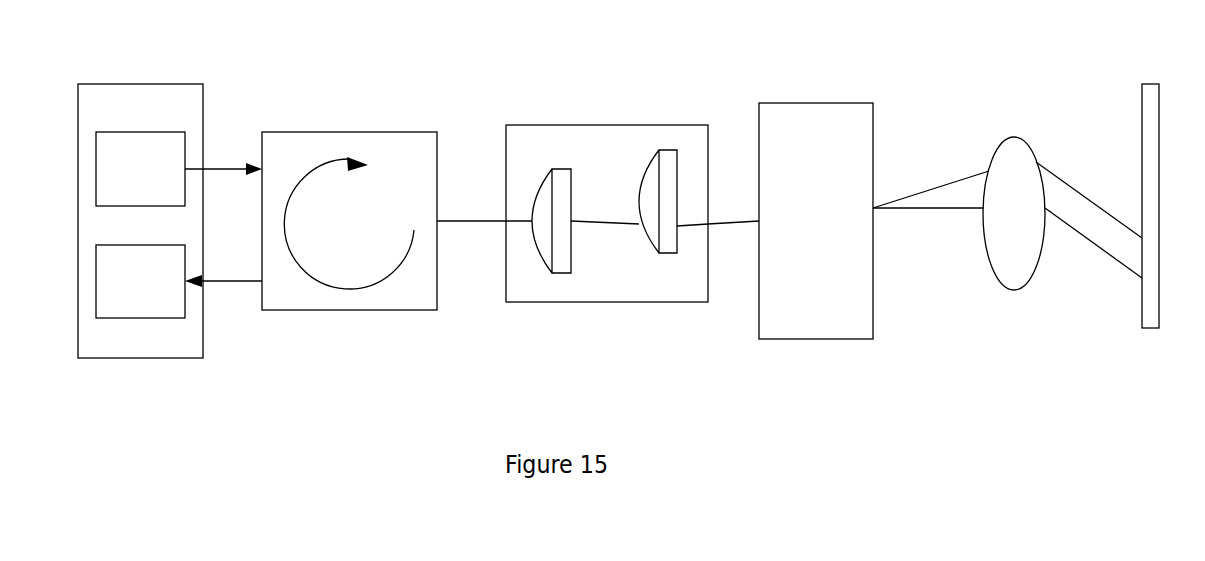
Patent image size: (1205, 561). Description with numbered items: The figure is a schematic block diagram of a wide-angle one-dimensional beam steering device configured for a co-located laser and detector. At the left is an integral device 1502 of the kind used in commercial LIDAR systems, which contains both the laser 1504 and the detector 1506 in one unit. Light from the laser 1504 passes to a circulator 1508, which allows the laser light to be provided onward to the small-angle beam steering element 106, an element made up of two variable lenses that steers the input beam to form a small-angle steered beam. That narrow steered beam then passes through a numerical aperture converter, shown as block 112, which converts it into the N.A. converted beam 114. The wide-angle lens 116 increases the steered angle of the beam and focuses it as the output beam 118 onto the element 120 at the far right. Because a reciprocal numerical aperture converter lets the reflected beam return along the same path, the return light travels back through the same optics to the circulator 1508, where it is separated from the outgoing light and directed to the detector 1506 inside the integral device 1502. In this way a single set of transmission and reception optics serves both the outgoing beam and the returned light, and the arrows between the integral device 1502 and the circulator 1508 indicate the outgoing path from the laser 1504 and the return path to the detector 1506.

The integral device 1502 is at (140, 201).
The laser 1504 is at (179, 169).
The detector 1506 is at (179, 281).
The circulator 1508 is at (349, 199).
The small-angle beam steering element 106 is at (607, 189).
The optical element 112 is at (816, 198).
The N.A. converted beam 114 is at (931, 171).
The wide-angle lens 116 is at (1014, 187).
The output beam 118 is at (1089, 228).
The detector 120 is at (1139, 181).